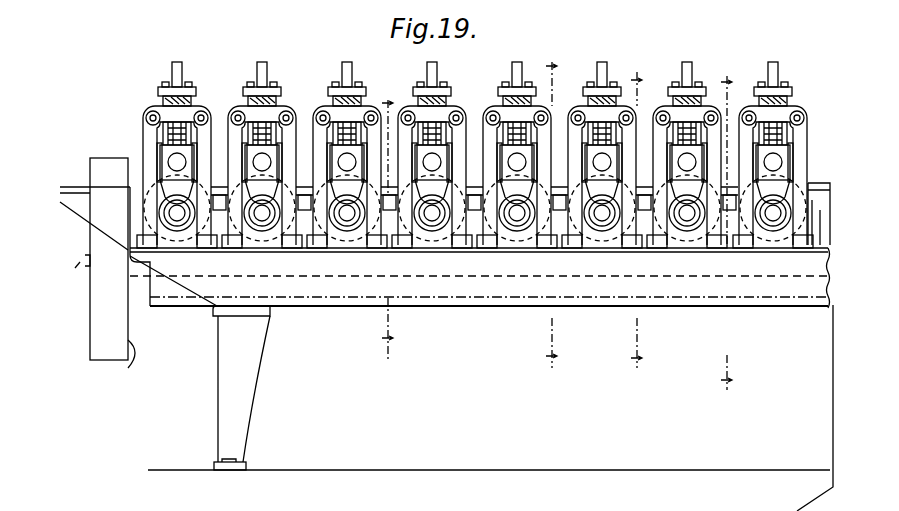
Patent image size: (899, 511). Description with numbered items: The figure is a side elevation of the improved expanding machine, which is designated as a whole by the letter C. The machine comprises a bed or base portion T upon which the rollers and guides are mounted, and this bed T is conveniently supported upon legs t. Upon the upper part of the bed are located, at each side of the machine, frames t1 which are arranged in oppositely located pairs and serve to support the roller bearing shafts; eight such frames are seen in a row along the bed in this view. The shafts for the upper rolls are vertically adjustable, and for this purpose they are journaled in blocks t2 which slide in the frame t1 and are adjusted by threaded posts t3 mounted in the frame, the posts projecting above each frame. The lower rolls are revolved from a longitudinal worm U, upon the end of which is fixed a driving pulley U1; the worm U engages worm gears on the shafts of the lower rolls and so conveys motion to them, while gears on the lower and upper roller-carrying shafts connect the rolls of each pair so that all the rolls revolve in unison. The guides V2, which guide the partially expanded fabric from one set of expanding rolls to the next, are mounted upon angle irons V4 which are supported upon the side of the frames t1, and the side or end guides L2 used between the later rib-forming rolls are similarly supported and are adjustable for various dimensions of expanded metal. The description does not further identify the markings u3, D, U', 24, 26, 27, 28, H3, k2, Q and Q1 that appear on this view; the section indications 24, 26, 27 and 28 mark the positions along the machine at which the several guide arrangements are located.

The threaded posts t3 is at (180, 76).
The frames t1 is at (182, 158).
The blocks t2 is at (157, 137).
The lower roll u3 is at (177, 225).
The bracket D is at (145, 162).
The bracket arm U' is at (70, 275).
The driving pulley U1 is at (116, 368).
The longitudinal worm U is at (335, 307).
The machine C is at (520, 288).
The bed T is at (752, 286).
The legs t is at (222, 368).
The section line 24 is at (385, 229).
The section line 26 is at (549, 213).
The section line 27 is at (637, 218).
The section line 28 is at (725, 231).
The connecting bar H3 is at (556, 186).
The link k2 is at (641, 190).
The guide Q is at (730, 138).
The side or end guides L2 is at (730, 170).
The guide bar Q1 is at (698, 268).
The guides V2 is at (393, 205).
The angle irons V4 is at (402, 212).